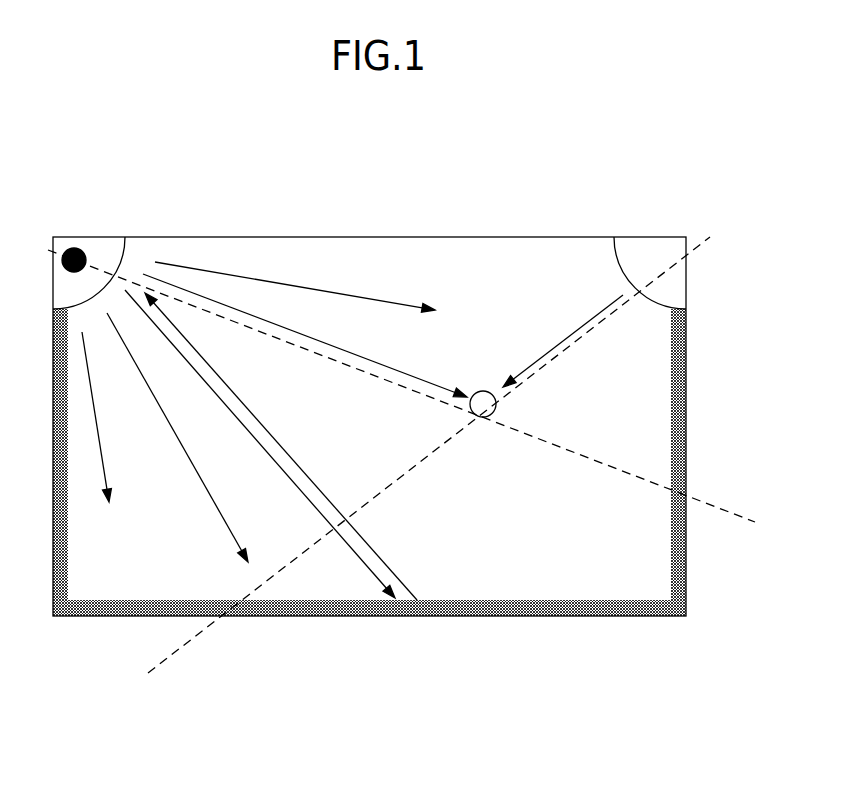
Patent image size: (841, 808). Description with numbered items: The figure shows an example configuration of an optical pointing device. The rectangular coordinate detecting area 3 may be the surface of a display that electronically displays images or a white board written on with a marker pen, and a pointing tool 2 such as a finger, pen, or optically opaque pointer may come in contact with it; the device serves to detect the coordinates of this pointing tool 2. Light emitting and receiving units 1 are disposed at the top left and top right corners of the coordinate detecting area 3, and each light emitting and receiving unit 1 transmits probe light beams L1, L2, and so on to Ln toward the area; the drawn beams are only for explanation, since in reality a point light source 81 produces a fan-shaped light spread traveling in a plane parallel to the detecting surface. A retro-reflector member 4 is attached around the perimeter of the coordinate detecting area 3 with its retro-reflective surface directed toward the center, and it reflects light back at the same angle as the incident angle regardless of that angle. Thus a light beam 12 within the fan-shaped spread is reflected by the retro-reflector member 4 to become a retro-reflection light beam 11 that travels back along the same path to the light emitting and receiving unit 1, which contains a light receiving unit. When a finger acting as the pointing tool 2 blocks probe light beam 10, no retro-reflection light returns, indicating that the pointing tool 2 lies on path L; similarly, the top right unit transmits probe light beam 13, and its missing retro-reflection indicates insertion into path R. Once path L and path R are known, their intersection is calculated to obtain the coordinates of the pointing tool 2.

The light emitting and receiving unit 1 is at (106, 248).
The pointing tool 2 is at (496, 404).
The coordinate detecting area 3 is at (495, 248).
The retro-reflector member 4 is at (68, 533).
The point light source 81 is at (75, 248).
The probe light beam 10 is at (305, 335).
The retro-reflection light beam 11 is at (260, 444).
The light beam 12 is at (281, 446).
The probe light beam 13 is at (563, 341).
The path of the probe light beam 10 L is at (401, 386).
The path of the probe light beam 13 R is at (440, 445).
The light beam L1 is at (117, 417).
The light beam L2 is at (191, 437).
The light beam Ln is at (295, 287).